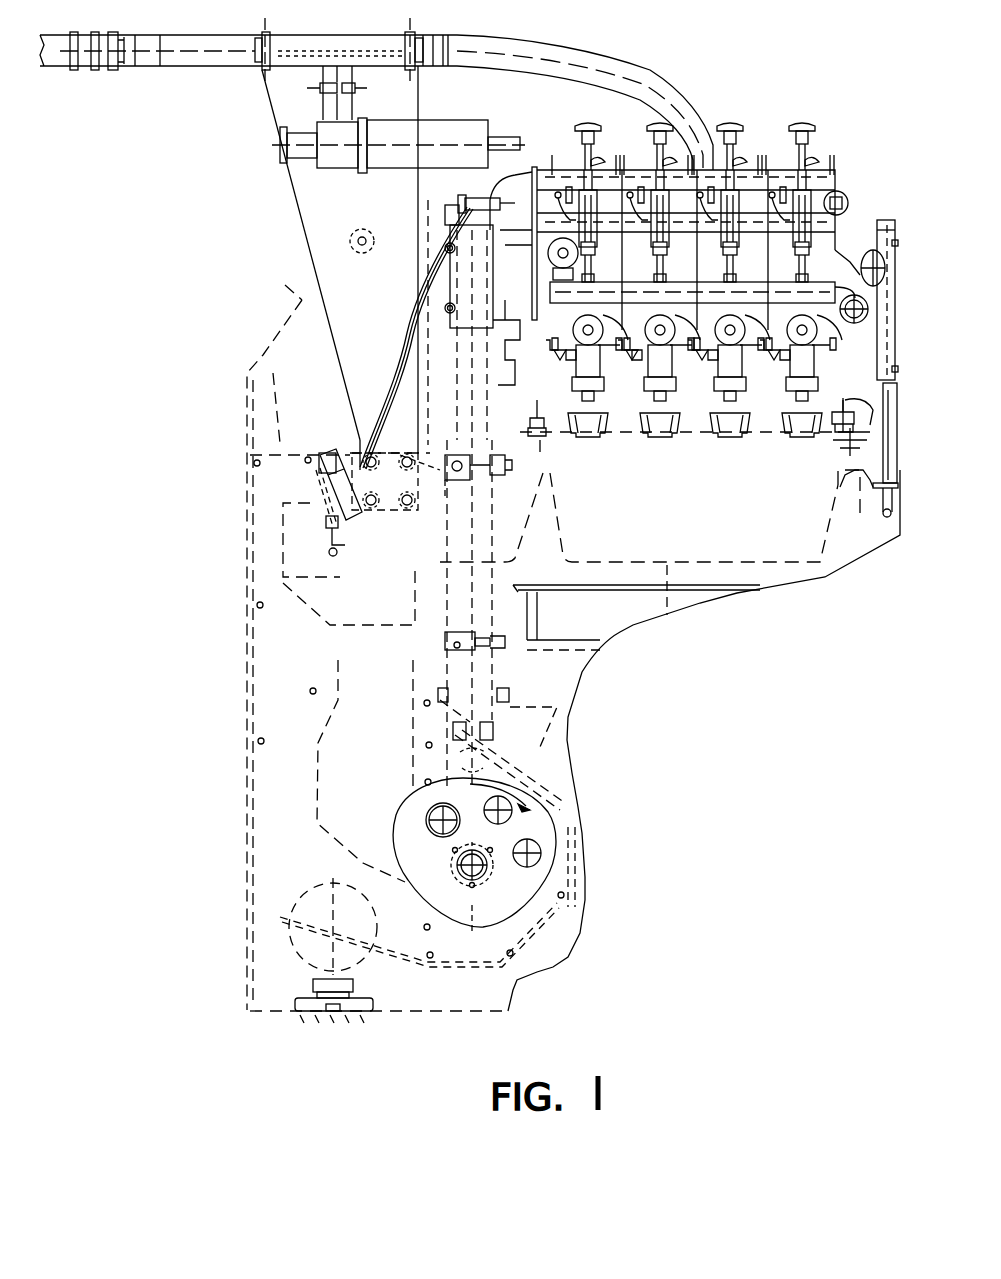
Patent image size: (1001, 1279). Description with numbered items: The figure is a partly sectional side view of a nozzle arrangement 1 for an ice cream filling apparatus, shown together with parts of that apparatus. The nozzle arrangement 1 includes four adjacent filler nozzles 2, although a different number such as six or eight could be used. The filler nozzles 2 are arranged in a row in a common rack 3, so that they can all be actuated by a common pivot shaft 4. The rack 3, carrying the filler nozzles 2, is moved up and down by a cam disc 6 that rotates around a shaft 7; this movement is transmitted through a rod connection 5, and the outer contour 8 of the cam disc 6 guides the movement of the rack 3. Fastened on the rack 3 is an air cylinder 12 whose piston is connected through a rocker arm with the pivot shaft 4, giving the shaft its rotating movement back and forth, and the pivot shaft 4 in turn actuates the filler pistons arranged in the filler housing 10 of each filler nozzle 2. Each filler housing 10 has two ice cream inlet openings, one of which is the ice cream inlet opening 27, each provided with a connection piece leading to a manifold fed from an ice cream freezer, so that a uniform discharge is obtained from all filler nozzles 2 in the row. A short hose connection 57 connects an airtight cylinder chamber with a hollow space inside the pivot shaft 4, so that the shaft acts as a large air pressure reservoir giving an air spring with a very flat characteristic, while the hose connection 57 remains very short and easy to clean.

The nozzle arrangement 1 is at (840, 158).
The filler nozzles 2 is at (660, 410).
The rack 3 is at (549, 169).
The pivot shaft 4 is at (505, 196).
The rod connection 5 is at (457, 530).
The cam disc 6 is at (418, 207).
The shaft 7 is at (493, 870).
The outer contour 8 is at (554, 836).
The filler housing 10 is at (650, 534).
The air cylinder 12 is at (463, 287).
The ice cream inlet opening 27 is at (598, 355).
The hose connection 57 is at (578, 200).